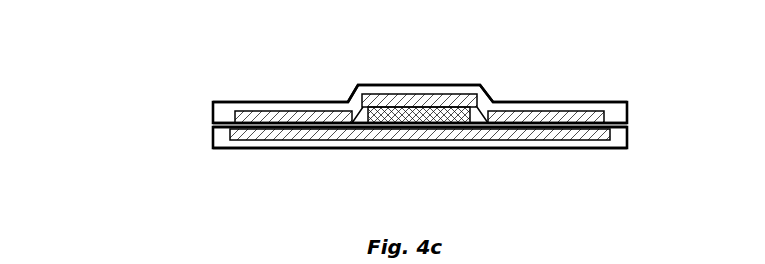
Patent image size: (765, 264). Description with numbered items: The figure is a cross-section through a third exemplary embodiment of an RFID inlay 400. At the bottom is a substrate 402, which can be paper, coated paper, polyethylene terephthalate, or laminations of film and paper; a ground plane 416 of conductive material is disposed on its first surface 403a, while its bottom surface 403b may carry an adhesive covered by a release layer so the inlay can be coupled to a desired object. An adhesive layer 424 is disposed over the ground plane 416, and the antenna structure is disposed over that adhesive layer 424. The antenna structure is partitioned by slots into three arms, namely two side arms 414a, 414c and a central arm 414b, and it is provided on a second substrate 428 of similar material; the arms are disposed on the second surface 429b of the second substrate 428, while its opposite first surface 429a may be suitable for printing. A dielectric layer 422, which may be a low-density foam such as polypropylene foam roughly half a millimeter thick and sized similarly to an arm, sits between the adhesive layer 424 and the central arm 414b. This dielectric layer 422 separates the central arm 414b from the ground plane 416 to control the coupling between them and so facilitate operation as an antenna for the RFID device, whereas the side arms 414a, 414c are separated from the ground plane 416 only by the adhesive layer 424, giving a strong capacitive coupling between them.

The inlay 400 is at (125, 12).
The substrate 402 is at (223, 139).
The first surface 403a is at (216, 130).
The bottom surface 403b is at (597, 150).
The side arm 414a is at (315, 117).
The central arm 414b is at (420, 102).
The side arm 414c is at (540, 117).
The ground plane 416 is at (422, 135).
The dielectric layer 422 is at (467, 115).
The adhesive layer 424 is at (628, 125).
The second substrate 428 is at (240, 108).
The first surface of second substrate 429a is at (615, 101).
The second surface of second substrate 429b is at (217, 122).